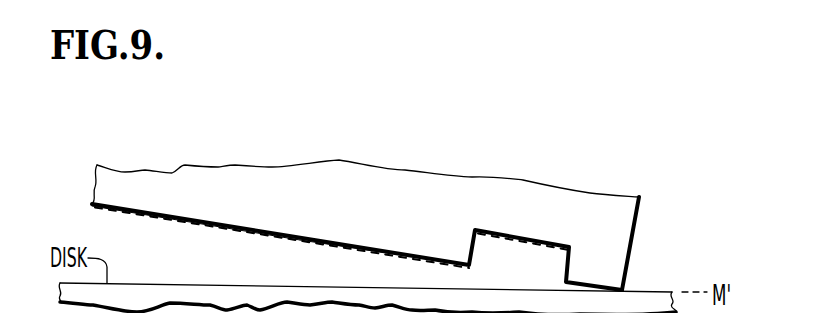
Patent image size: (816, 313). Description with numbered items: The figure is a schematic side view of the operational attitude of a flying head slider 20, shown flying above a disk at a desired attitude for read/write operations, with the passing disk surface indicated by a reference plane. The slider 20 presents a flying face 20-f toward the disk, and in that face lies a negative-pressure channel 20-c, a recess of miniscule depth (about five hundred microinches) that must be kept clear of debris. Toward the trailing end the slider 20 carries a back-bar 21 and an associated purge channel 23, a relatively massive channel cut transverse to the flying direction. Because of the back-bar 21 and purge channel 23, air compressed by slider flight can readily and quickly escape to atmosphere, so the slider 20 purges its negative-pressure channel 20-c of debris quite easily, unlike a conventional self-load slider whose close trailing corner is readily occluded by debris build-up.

The slider 20 is at (135, 160).
The negative-pressure channel 20-c is at (299, 238).
The flying face 20-f is at (194, 229).
The back-bar 21 is at (609, 266).
The purge channel 23 is at (515, 236).